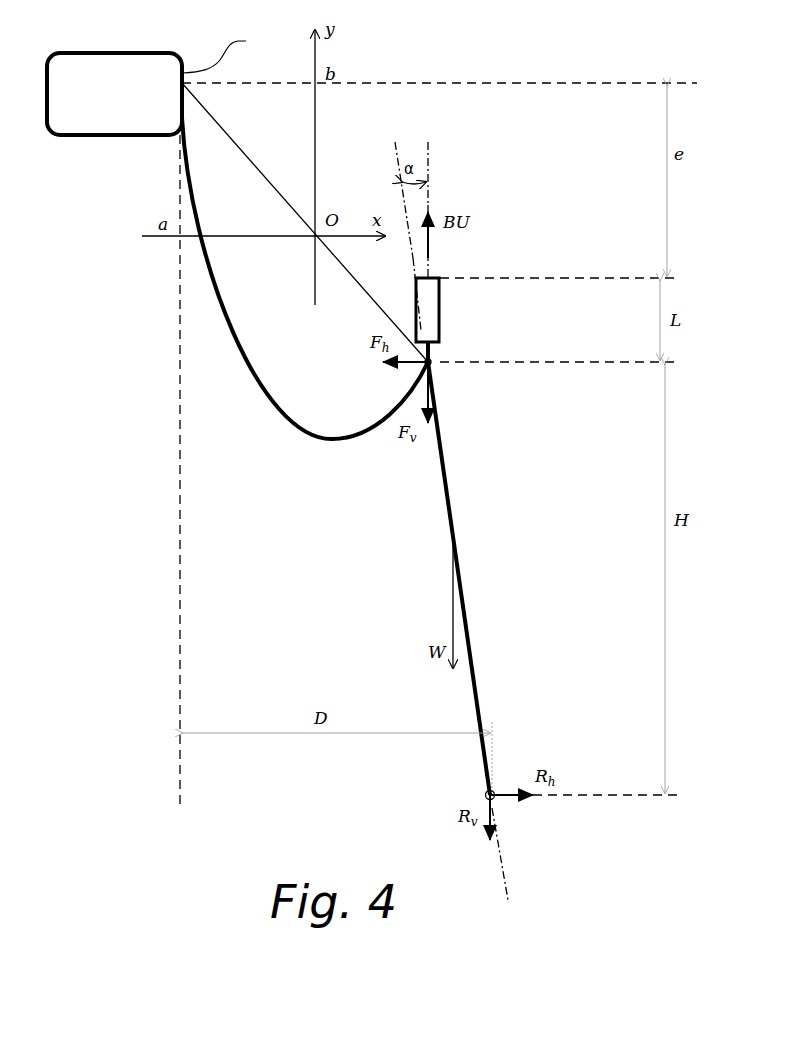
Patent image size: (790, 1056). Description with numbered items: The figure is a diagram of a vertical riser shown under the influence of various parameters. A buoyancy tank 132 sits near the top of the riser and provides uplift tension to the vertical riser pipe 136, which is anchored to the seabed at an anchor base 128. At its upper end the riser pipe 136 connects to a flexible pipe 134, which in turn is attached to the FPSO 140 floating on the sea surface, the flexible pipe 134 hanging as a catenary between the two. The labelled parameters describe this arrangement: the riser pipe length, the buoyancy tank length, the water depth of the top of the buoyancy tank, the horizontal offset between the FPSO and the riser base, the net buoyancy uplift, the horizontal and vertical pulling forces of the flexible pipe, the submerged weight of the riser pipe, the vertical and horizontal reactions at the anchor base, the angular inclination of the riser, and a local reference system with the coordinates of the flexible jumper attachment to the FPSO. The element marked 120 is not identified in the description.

The aircraft 120 is at (114, 94).
The FPSO 140 is at (234, 51).
The flexible pipe 134 is at (278, 413).
The buoyancy tank 132 is at (440, 322).
The vertical riser pipe 136 is at (445, 477).
The anchor base 128 is at (495, 800).